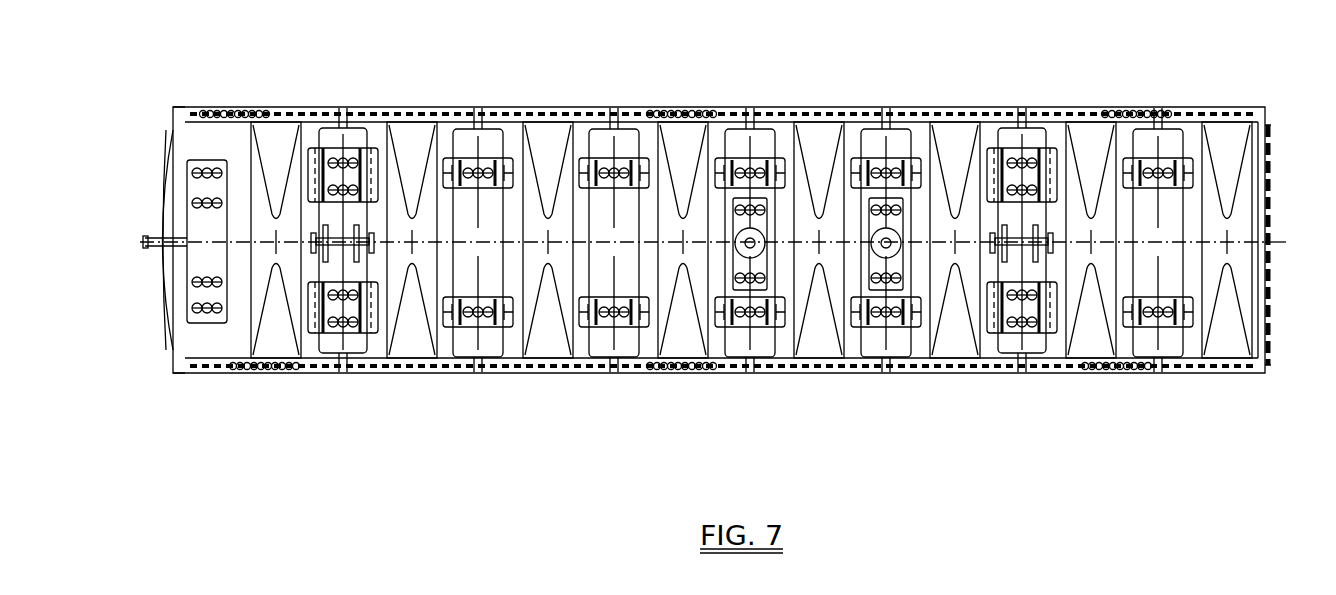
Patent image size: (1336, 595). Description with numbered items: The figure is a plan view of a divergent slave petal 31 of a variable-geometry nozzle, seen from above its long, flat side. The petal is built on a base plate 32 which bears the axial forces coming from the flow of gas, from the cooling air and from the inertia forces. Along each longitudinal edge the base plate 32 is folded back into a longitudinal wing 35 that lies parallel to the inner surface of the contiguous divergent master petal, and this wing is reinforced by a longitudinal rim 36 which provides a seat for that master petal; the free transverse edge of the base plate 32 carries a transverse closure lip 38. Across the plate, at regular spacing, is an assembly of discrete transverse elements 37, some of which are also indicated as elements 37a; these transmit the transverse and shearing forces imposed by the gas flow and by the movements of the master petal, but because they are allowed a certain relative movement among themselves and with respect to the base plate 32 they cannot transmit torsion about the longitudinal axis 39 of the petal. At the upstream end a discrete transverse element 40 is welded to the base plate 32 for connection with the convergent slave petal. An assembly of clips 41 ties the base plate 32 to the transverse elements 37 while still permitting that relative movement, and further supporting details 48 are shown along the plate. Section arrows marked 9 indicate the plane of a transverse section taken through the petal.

The section line 9- 9 is at (341, 63).
The slave petal 31 is at (733, 96).
The base plate 32 is at (177, 334).
The longitudinal wing 35 is at (855, 367).
The rim 36 is at (926, 368).
The discrete transverse elements 37 is at (1087, 142).
The wide clamp frames 37a is at (357, 122).
The transverse closure lip 38 is at (1268, 216).
The longitudinal axis 39 is at (1283, 247).
The discrete transverse element 40 is at (210, 345).
The clips 41 is at (584, 313).
The support frames 48 is at (612, 88).